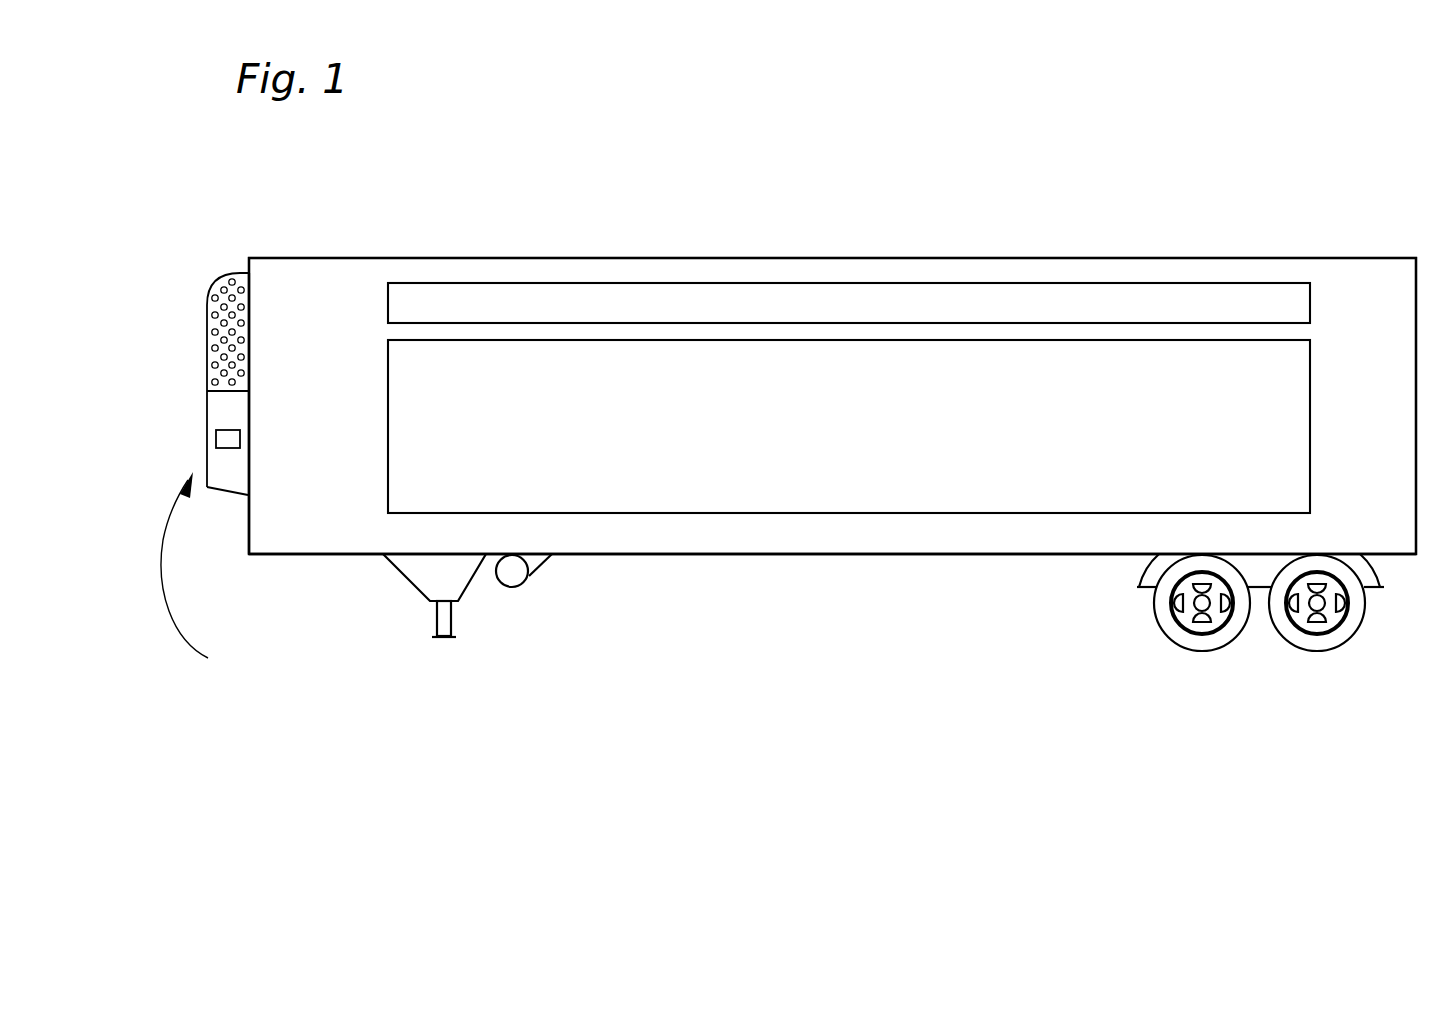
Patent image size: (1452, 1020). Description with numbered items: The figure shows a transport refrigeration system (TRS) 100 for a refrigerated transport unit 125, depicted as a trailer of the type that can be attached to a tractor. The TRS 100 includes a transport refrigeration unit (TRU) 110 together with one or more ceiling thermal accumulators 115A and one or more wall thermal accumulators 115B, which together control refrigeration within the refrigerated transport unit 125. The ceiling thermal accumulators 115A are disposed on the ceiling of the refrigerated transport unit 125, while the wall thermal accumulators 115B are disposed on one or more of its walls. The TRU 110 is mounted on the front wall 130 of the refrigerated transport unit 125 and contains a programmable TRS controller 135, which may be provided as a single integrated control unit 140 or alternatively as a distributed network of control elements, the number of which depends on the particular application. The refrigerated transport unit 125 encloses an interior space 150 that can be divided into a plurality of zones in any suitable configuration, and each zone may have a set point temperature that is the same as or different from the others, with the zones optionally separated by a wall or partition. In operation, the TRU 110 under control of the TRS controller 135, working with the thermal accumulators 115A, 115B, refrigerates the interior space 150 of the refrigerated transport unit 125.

The transport refrigeration system (TRS) 100 is at (583, 122).
The transport refrigeration unit (TRU) 110 is at (215, 276).
The ceiling thermal accumulator 115A is at (877, 316).
The wall thermal accumulator 115B is at (877, 406).
The refrigerated transport unit 125 is at (468, 257).
The front wall 130 is at (247, 535).
The TRS controller 135 is at (209, 571).
The single integrated control unit 140 is at (220, 449).
The interior space 150 is at (753, 543).